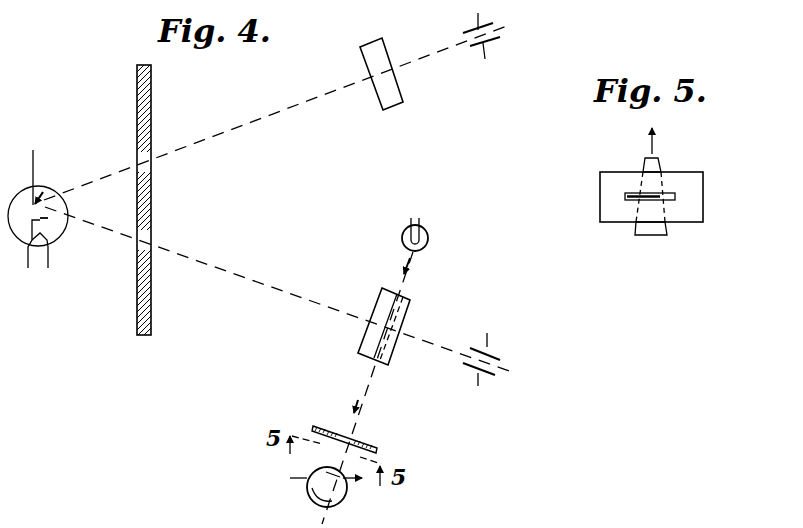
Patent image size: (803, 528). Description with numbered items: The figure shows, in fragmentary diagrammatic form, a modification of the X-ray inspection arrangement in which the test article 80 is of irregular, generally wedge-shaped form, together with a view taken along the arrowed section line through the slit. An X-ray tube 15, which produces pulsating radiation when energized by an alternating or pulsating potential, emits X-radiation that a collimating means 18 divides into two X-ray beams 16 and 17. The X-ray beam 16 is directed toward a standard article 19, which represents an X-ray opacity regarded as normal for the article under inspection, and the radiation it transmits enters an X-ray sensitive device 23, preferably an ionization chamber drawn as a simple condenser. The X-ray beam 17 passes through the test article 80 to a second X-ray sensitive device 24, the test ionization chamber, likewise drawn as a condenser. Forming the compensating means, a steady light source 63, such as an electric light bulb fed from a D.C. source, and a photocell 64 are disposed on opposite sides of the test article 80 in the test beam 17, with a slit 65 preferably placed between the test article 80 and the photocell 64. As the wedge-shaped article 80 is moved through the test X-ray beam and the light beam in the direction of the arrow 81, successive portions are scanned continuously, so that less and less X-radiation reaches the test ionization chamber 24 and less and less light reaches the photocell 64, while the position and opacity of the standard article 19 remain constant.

In FIG. 4, the X-ray tube 15 is at (48, 187).
In FIG. 4, the X-ray beam 16 is at (273, 116).
In FIG. 4, the X-ray beam 17 is at (266, 278).
In FIG. 4, the collimating means 18 is at (152, 198).
In FIG. 4, the standard article 19 is at (382, 88).
In FIG. 4, the X-ray sensitive device 23 is at (472, 52).
In FIG. 4, the X-ray sensitive device 24 is at (476, 347).
In FIG. 4, the steady light source 63 is at (428, 240).
In FIG. 4, the photocell 64 is at (312, 487).
In FIG. 4, the slit 65 is at (350, 440).
In FIG. 5, the slit 65 is at (675, 197).
In FIG. 4, the test article 80 is at (382, 307).
In FIG. 5, the test article 80 is at (647, 164).
In FIG. 5, the arrow 81 is at (655, 148).